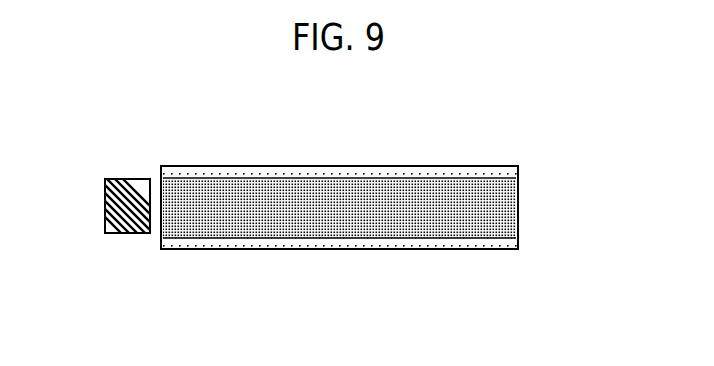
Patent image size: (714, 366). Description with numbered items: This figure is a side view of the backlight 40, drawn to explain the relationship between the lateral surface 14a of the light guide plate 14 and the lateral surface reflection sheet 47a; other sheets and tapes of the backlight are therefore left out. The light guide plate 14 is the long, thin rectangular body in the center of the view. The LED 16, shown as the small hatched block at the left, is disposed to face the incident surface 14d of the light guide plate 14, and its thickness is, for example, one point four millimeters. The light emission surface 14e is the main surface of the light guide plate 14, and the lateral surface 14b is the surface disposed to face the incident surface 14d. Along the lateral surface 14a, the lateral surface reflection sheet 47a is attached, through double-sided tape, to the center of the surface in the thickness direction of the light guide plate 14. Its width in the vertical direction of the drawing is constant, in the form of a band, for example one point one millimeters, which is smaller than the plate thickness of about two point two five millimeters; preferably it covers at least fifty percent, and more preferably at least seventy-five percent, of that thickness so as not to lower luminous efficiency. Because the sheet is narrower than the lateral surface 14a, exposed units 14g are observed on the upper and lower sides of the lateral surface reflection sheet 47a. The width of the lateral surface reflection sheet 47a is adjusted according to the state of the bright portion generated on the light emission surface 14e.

The backlight 40 is at (543, 148).
The light guide plate 14 is at (367, 202).
The lateral surface 14a is at (380, 173).
The lateral surface 14b is at (518, 182).
The incident surface 14d is at (161, 168).
The light emission surface 14e is at (246, 166).
The exposed units 14g is at (313, 178).
The lateral surface reflection sheet 47a is at (512, 222).
The LED 16 is at (105, 212).